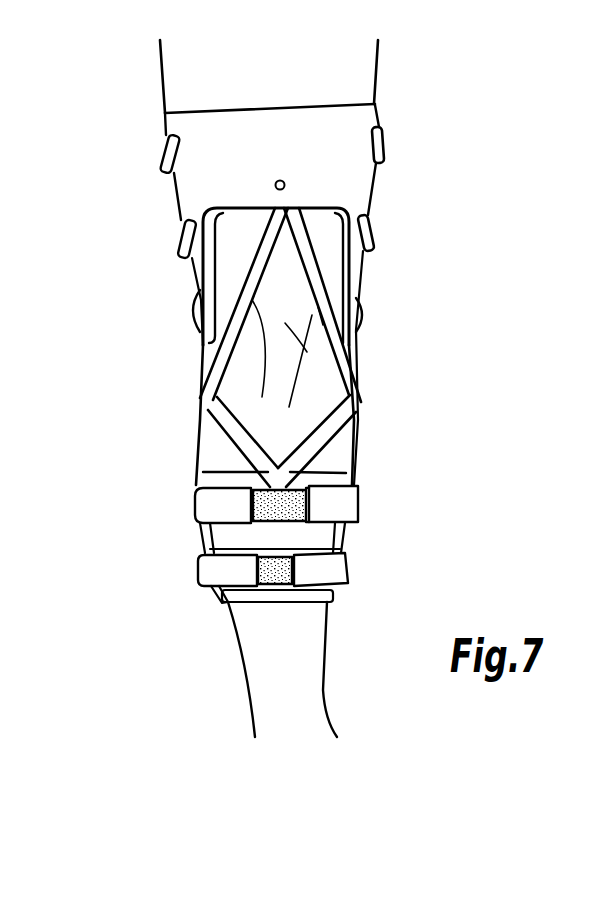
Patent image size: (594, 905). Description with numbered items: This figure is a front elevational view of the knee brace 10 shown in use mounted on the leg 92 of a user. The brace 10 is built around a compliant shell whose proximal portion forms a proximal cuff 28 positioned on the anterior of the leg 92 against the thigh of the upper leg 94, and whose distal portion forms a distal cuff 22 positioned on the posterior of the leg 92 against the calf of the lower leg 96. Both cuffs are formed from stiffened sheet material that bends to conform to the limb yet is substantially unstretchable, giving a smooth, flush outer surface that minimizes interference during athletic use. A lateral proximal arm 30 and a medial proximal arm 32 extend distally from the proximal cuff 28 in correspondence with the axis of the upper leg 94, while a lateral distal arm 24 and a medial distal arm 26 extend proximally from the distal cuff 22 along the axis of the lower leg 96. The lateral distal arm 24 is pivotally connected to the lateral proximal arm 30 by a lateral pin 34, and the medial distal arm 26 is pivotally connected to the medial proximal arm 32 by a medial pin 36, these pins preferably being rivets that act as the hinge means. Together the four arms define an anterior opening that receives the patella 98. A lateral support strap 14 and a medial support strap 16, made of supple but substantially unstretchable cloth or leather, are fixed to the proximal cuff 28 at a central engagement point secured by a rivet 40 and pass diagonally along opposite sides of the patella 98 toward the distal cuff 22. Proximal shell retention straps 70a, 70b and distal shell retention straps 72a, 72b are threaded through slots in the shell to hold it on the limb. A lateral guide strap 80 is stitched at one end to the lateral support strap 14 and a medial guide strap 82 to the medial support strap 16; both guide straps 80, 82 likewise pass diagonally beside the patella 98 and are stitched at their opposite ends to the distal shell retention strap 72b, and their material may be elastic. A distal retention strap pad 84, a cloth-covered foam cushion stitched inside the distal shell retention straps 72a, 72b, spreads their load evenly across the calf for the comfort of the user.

The brace 10 is at (478, 185).
The lateral support strap 14 is at (306, 268).
The medial support strap 16 is at (258, 250).
The distal cuff 22 is at (215, 598).
The lateral distal arm 24 is at (358, 353).
The medial distal arm 26 is at (203, 360).
The proximal cuff 28 is at (353, 121).
The lateral proximal arm 30 is at (358, 278).
The medial proximal arm 32 is at (200, 278).
The lateral pin 34 is at (362, 323).
The medial pin 36 is at (203, 318).
The rivet 40 is at (275, 185).
The proximal shell retention strap 70a is at (384, 148).
The proximal shell retention strap 70b is at (373, 230).
The distal shell retention strap 72a is at (333, 577).
The distal shell retention strap 72b is at (347, 512).
The lateral guide strap 80 is at (320, 430).
The medial guide strap 82 is at (240, 440).
The distal retention strap pad 84 is at (254, 600).
The leg 92 is at (196, 65).
The upper leg 94 is at (352, 66).
The lower leg 96 is at (305, 628).
The patella 98 is at (353, 403).